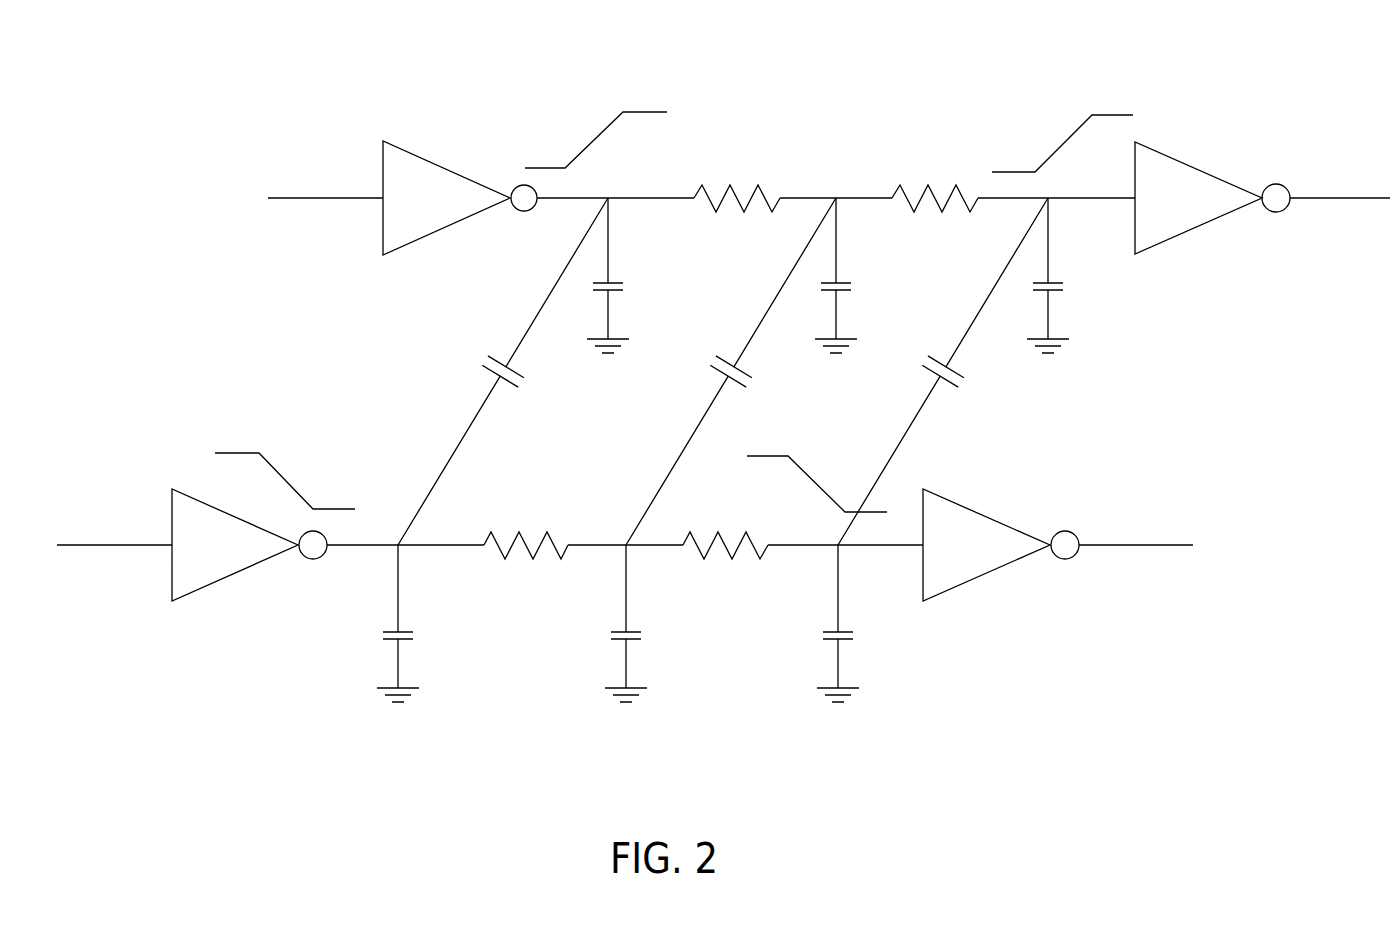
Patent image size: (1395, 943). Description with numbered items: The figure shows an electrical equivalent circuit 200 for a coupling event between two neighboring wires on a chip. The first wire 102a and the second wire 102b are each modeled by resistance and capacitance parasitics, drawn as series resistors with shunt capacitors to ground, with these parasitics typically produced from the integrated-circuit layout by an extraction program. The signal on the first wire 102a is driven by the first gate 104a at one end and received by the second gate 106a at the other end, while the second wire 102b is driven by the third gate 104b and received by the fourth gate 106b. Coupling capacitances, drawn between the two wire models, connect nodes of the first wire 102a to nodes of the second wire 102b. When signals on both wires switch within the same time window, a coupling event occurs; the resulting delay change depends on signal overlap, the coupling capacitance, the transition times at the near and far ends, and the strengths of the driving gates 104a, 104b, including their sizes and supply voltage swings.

The electrical equivalent circuit 200 is at (225, 132).
The first wire 102a is at (597, 548).
The second wire 102b is at (797, 198).
The first gate 104a is at (198, 560).
The third gate 104b is at (427, 190).
The second gate 106a is at (950, 565).
The fourth gate 106b is at (1180, 193).